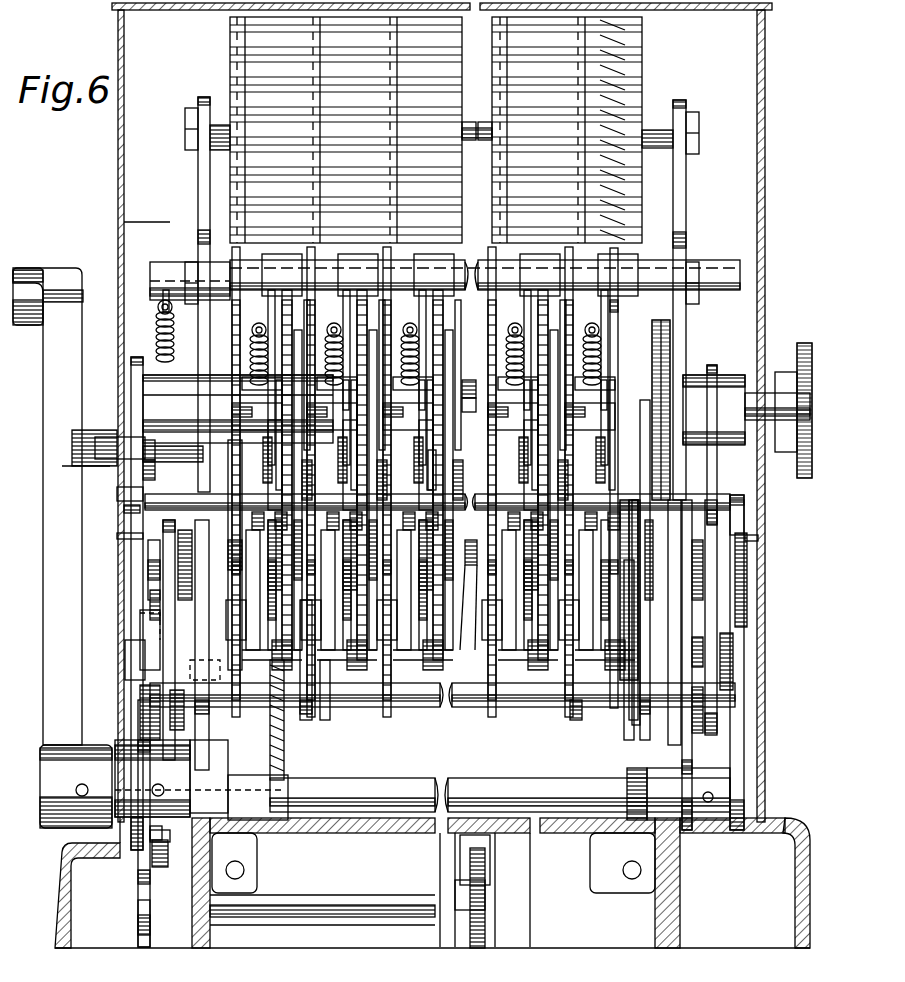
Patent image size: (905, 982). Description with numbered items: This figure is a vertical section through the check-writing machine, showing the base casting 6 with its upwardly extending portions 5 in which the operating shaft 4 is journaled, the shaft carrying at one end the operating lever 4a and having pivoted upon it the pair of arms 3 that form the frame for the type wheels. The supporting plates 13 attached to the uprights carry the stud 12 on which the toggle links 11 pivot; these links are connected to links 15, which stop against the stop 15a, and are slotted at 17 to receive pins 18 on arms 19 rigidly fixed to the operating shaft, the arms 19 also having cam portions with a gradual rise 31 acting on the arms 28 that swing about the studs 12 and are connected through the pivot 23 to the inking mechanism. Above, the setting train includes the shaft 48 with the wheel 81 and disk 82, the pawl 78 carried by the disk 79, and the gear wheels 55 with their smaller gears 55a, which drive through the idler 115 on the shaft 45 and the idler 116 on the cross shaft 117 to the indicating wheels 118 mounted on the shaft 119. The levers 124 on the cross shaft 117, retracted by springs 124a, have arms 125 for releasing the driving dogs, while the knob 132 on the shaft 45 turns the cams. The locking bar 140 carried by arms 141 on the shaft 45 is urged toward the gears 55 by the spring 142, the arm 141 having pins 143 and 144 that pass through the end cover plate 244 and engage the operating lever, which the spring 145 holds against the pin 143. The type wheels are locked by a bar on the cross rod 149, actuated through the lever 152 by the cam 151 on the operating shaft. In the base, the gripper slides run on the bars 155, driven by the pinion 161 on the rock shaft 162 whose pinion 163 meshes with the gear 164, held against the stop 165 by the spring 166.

The arms 3 is at (185, 725).
The operating shaft 4 is at (352, 790).
The operating lever 4a is at (101, 548).
The upwardly extending portions 5 is at (460, 780).
The base casting 6 is at (65, 910).
The links 11 is at (160, 595).
The stud 12 is at (746, 518).
The supporting plates 13 is at (203, 202).
The links 15 is at (172, 692).
The stop 15a is at (150, 575).
The slot 17 is at (619, 253).
The pins 18 is at (140, 620).
The arms 19 is at (135, 662).
The pivot 23 is at (645, 520).
The arms 28 is at (153, 540).
The gradual rise 31 is at (130, 536).
The shaft 45 is at (470, 412).
The shaft 48 is at (466, 560).
The gear wheel 55 is at (240, 556).
The smaller gear 55a is at (234, 510).
The spring pressed pawl 78 is at (671, 570).
The disk 79 is at (600, 718).
The wheel 81 is at (634, 640).
The disk 82 is at (668, 722).
The idler 115 is at (230, 372).
The idler 116 is at (228, 247).
The cross shaft 117 is at (448, 282).
The indicating wheel 118 is at (237, 78).
The shaft 119 is at (480, 142).
The lever 124 is at (420, 312).
The springs 124a is at (425, 372).
The arms 125 is at (436, 455).
The knob 132 is at (804, 343).
The locking bar 140 is at (128, 505).
The arms 141 is at (133, 470).
The spring 142 is at (164, 312).
The pin 143 is at (101, 437).
The pin 144 is at (156, 455).
The spring 145 is at (312, 720).
The cross rod 149 is at (378, 700).
The cam 151 is at (272, 735).
The lever 152 is at (330, 718).
The bars 155 is at (238, 870).
The pinion 161 is at (478, 915).
The rock shaft 162 is at (335, 918).
The pinion 163 is at (140, 925).
The gear 164 is at (146, 732).
The stop 165 is at (150, 858).
The spring 166 is at (170, 843).
The end cover plate 244 is at (147, 214).